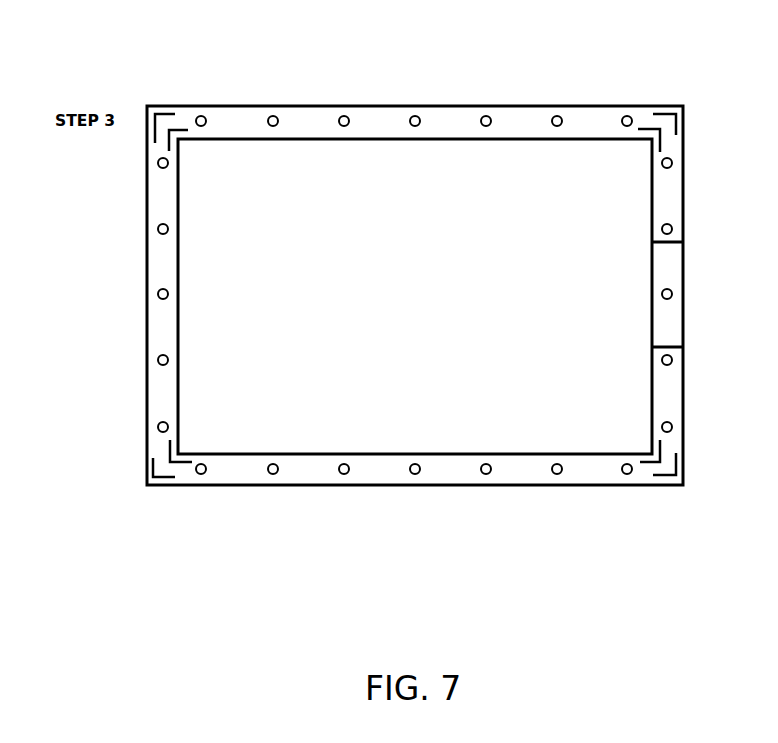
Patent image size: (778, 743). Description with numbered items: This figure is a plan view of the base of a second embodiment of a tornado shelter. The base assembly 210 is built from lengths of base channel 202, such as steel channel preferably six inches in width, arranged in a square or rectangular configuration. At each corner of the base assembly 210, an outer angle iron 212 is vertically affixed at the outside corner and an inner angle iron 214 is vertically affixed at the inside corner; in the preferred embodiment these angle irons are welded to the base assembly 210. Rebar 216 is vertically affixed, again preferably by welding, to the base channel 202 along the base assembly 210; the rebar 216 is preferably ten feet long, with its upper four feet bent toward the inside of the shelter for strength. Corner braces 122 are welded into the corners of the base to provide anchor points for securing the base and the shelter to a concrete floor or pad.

The base assembly 210 is at (593, 62).
The base channel 202 is at (447, 106).
The outer angle iron 212 is at (662, 113).
The inner angle iron 214 is at (643, 141).
The rebar 216 is at (344, 463).
The corner braces 122 is at (163, 148).